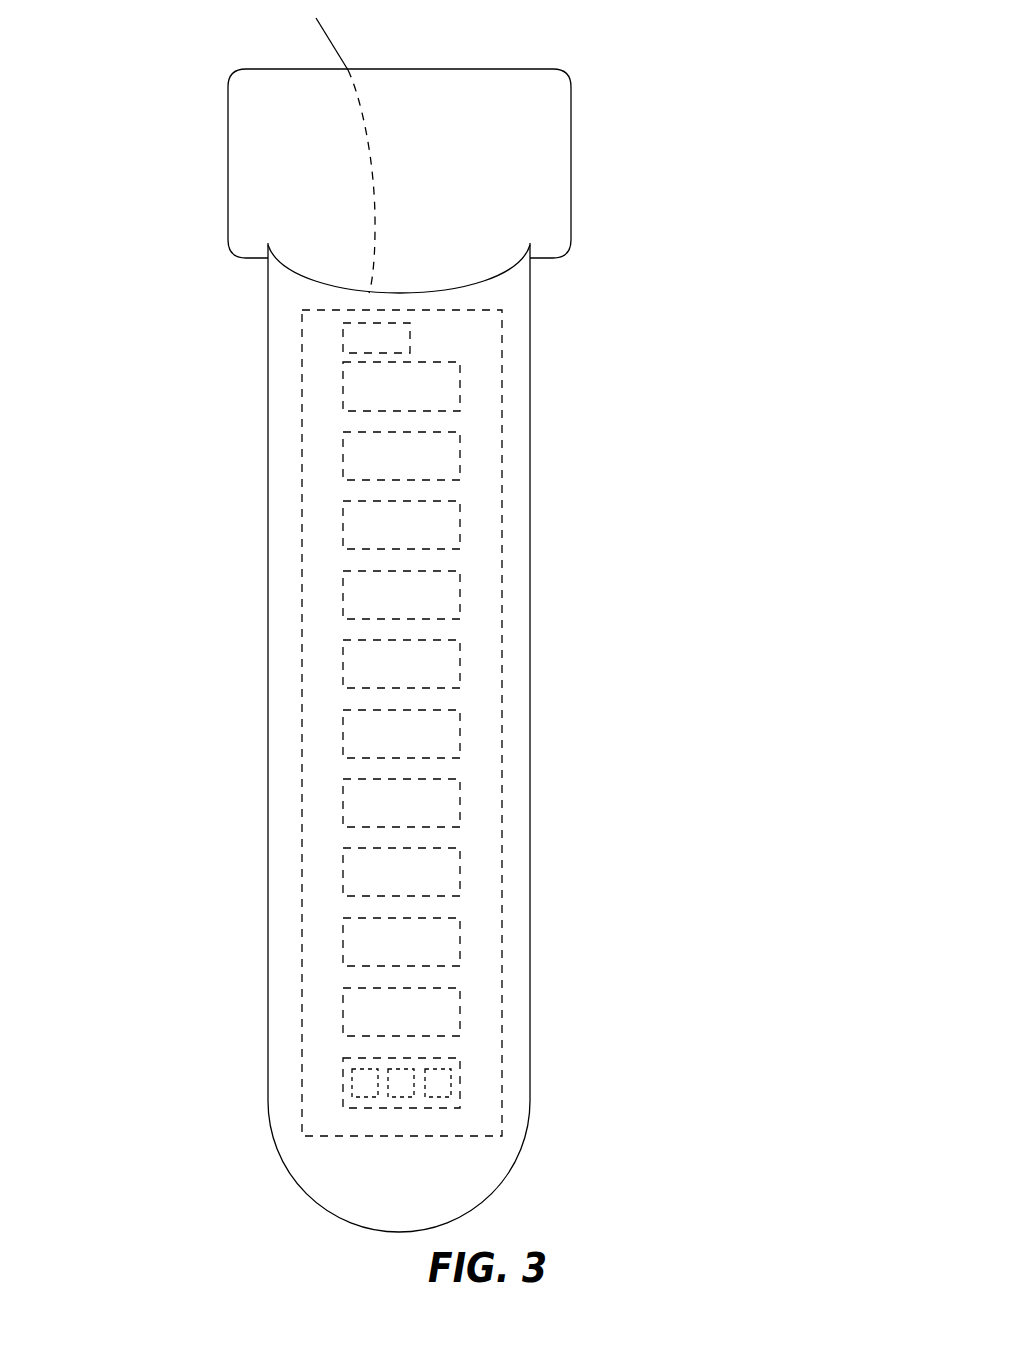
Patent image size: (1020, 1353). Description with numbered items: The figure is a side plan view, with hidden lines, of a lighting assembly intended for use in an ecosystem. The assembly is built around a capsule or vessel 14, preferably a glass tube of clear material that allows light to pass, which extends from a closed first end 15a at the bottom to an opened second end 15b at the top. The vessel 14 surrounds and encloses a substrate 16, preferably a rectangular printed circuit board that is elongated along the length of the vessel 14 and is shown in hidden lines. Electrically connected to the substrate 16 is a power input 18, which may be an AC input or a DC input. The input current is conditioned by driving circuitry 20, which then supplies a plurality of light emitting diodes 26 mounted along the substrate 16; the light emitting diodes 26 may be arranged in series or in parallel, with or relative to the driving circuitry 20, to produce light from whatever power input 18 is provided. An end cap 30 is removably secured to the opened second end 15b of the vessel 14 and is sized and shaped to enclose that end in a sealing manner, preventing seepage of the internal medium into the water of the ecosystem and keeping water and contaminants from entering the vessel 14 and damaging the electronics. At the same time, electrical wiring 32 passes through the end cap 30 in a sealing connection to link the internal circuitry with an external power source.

The vessel 14 is at (340, 680).
The closed first end 15a is at (207, 1133).
The opened second end 15b is at (147, 158).
The substrate 16 is at (485, 715).
The power input 18 is at (465, 713).
The driving circuitry 20 is at (479, 375).
The light emitting diodes 26 is at (423, 608).
The end cap 30 is at (444, 155).
The electrical wiring 32 is at (338, 52).